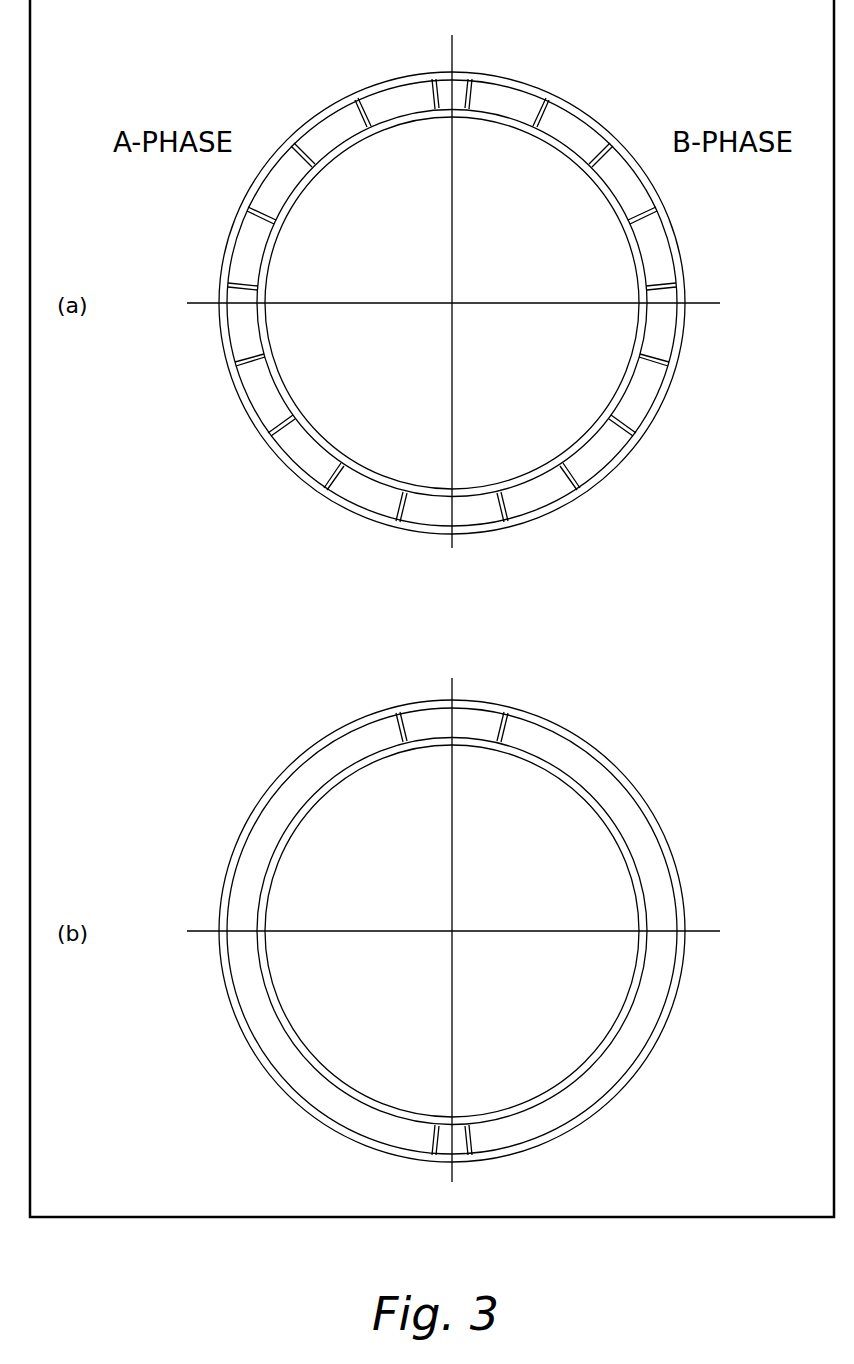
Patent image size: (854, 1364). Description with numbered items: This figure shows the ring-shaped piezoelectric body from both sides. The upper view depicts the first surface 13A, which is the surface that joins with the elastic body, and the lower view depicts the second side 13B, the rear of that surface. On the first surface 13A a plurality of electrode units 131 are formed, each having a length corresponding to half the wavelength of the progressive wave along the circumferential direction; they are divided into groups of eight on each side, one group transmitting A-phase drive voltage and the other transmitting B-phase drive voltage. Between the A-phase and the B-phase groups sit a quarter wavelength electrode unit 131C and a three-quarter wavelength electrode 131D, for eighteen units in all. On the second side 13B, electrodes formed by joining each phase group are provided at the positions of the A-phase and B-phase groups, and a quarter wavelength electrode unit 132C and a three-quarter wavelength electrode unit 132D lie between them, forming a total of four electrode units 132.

The first surface 13A is at (623, 110).
The second side 13B is at (623, 738).
The electrode units 131 is at (640, 197).
The quarter wavelength electrode unit 131C is at (477, 92).
The three-quarter wavelength electrode 131D is at (468, 512).
The electrode units 132 is at (640, 825).
The quarter wavelength electrode unit 132C is at (455, 1147).
The three-quarter wavelength electrode unit 132D is at (472, 722).